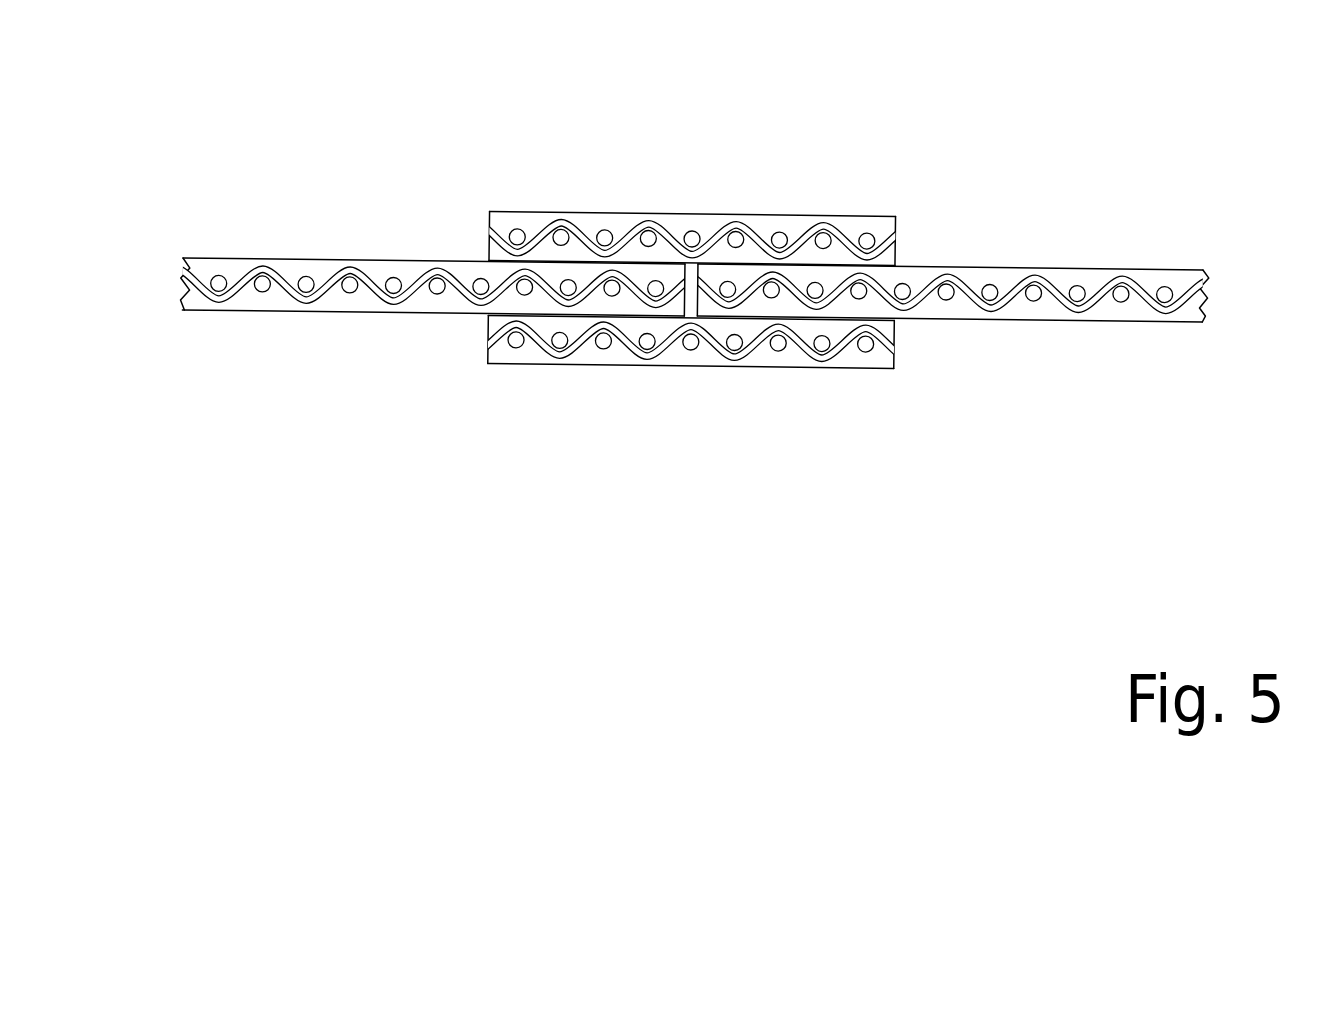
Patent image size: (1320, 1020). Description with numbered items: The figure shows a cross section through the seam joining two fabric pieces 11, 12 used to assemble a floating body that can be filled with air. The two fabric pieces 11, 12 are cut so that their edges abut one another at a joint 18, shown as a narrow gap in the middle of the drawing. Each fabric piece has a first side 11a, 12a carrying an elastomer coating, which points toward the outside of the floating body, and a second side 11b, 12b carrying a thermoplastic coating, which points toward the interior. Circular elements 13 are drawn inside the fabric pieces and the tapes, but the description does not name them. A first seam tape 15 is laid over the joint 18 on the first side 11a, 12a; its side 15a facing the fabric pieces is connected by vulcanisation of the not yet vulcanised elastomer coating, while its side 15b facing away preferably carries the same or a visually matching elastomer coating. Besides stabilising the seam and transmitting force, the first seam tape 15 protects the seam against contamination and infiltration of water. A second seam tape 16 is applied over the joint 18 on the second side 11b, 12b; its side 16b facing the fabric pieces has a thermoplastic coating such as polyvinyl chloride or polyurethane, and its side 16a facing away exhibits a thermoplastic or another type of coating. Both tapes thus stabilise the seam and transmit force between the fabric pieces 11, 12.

The fabric piece 11 is at (998, 283).
The first side of fabric piece 11a is at (1093, 267).
The second side of fabric piece 11b is at (1035, 322).
The fabric piece 12 is at (384, 261).
The first side of fabric piece 12a is at (277, 257).
The second side of fabric piece 12b is at (362, 312).
The conductive wires 13 is at (260, 283).
The first seam tape 15 is at (714, 145).
The side of first seam tape facing towards the fabric pieces 15a is at (578, 262).
The side of first seam tape facing away from the fabric pieces 15b is at (715, 215).
The second seam tape 16 is at (708, 413).
The side of second seam tape facing away from the fabric pieces 16a is at (630, 368).
The side of second seam tape facing towards the fabric pieces 16b is at (548, 313).
The joint 18 is at (692, 307).